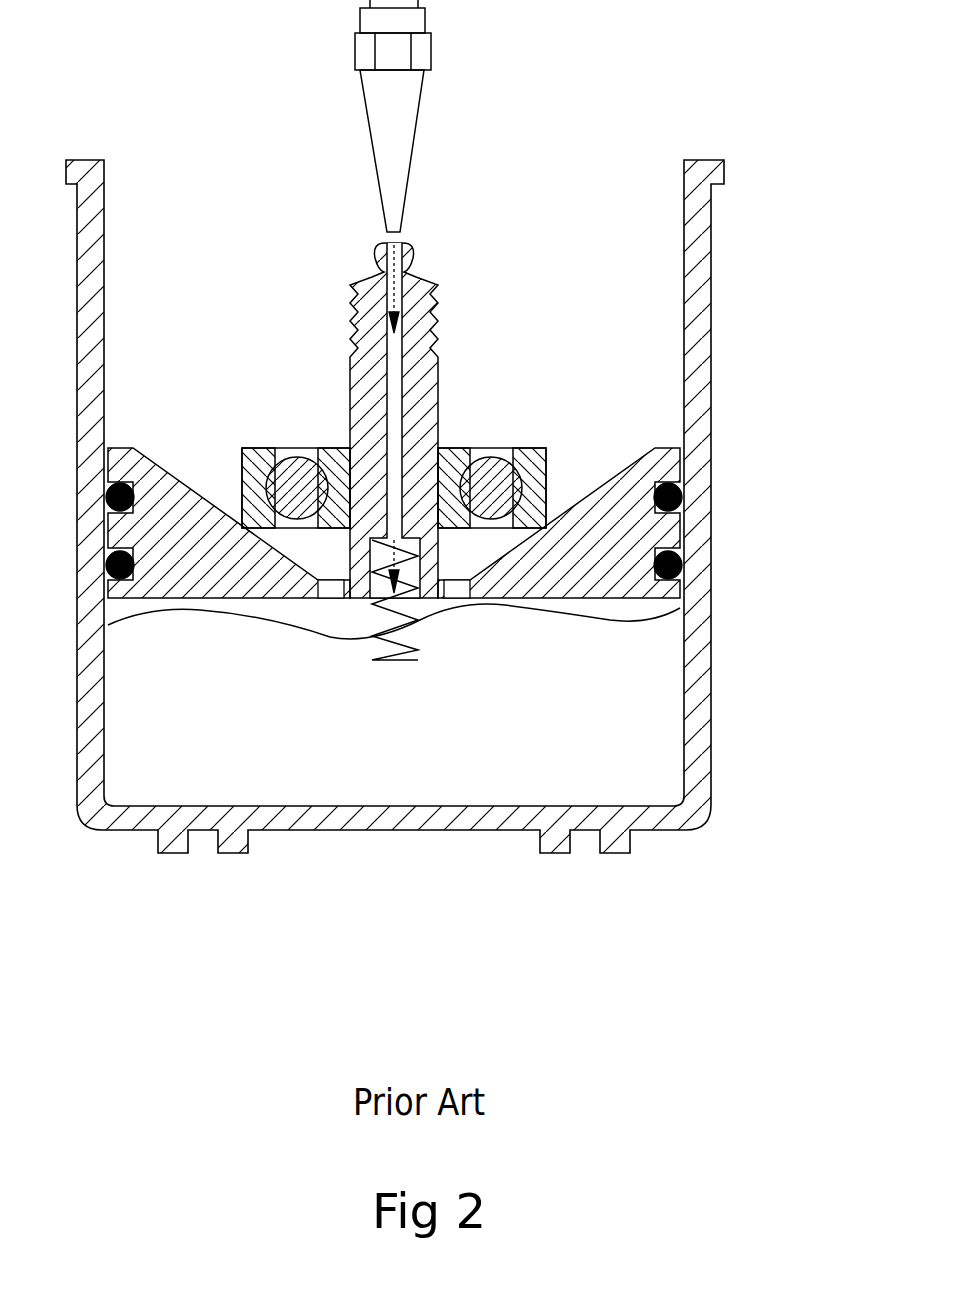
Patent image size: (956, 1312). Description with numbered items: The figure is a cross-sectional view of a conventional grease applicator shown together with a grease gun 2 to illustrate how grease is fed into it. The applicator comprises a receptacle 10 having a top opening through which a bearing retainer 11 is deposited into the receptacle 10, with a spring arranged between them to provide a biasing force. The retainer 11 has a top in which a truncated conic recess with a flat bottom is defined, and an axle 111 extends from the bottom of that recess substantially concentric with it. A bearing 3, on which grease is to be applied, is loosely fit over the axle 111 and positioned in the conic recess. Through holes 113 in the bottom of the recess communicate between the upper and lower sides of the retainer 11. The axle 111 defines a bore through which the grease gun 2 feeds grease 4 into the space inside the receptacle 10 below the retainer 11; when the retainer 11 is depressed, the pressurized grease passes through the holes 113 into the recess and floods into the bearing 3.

The grease gun 2 is at (401, 118).
The bearing 3 is at (535, 452).
The powder material 4 is at (297, 745).
The receptacle 10 is at (683, 827).
The bearing retainer 11 is at (612, 545).
The axle 111 is at (440, 363).
The through holes 113 is at (455, 592).